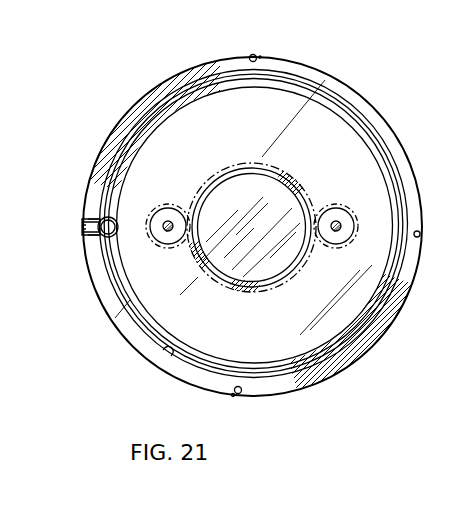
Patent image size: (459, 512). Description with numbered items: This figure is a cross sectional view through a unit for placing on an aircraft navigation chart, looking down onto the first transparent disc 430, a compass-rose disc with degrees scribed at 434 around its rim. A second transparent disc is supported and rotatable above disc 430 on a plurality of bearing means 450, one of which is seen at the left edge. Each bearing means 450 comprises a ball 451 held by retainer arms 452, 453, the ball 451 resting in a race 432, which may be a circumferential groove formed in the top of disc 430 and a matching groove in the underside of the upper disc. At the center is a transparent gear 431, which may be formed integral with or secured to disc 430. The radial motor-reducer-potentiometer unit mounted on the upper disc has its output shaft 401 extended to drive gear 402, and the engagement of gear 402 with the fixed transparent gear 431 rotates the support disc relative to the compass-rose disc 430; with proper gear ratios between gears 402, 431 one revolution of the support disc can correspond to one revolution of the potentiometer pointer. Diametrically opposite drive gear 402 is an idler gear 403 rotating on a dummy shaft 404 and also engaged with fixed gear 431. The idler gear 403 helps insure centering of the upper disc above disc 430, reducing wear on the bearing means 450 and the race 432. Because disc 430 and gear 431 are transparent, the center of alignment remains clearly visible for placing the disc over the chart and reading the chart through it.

The first transparent disc 430 is at (183, 388).
The transparent gear 431 is at (276, 284).
The race 432 is at (163, 352).
The degrees scribed 434 is at (252, 56).
The output shaft 401 is at (169, 221).
The drive gear 402 is at (178, 247).
The idler gear 403 is at (345, 246).
The dummy shaft 404 is at (337, 221).
The bearing means 450 is at (77, 238).
The ball 451 is at (119, 232).
The retainer arm 452 is at (88, 219).
The retainer arm 453 is at (88, 236).